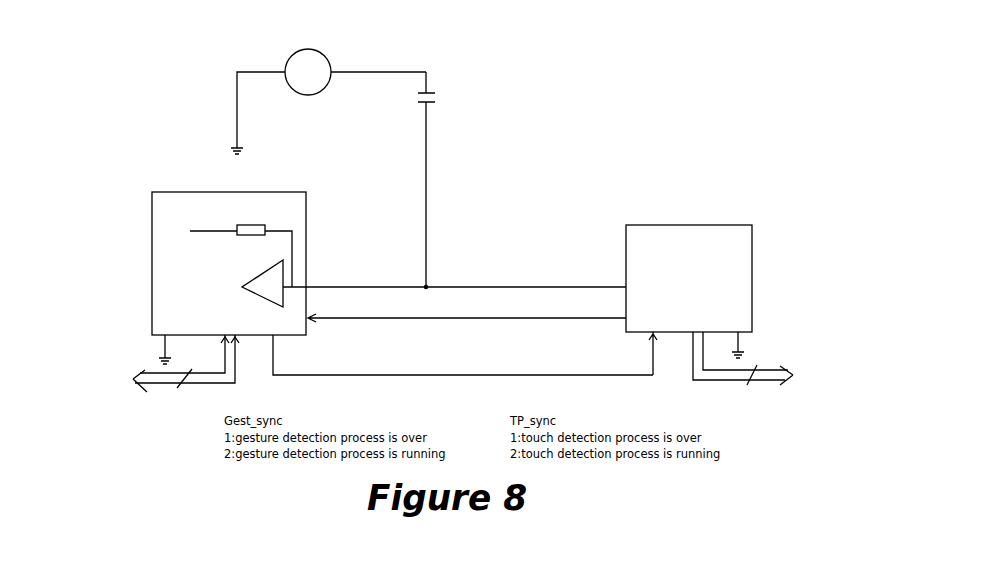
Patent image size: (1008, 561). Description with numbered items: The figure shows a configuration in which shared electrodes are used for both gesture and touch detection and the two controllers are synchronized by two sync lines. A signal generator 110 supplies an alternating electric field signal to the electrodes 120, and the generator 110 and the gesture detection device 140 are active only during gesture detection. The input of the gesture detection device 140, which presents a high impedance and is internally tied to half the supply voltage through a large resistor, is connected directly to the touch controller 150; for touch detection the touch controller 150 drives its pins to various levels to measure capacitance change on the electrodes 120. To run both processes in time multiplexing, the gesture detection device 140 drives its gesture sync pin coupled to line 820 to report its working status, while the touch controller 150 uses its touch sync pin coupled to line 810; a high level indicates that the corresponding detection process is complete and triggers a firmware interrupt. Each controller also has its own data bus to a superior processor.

The signal generator 110 is at (303, 84).
The capacitive sensor 120 is at (435, 100).
The gesture detection device 140 is at (228, 300).
The touch controller 150 is at (732, 315).
The sync line (TP_sync) 810 is at (540, 320).
The sync line (Gest_sync) 820 is at (448, 373).